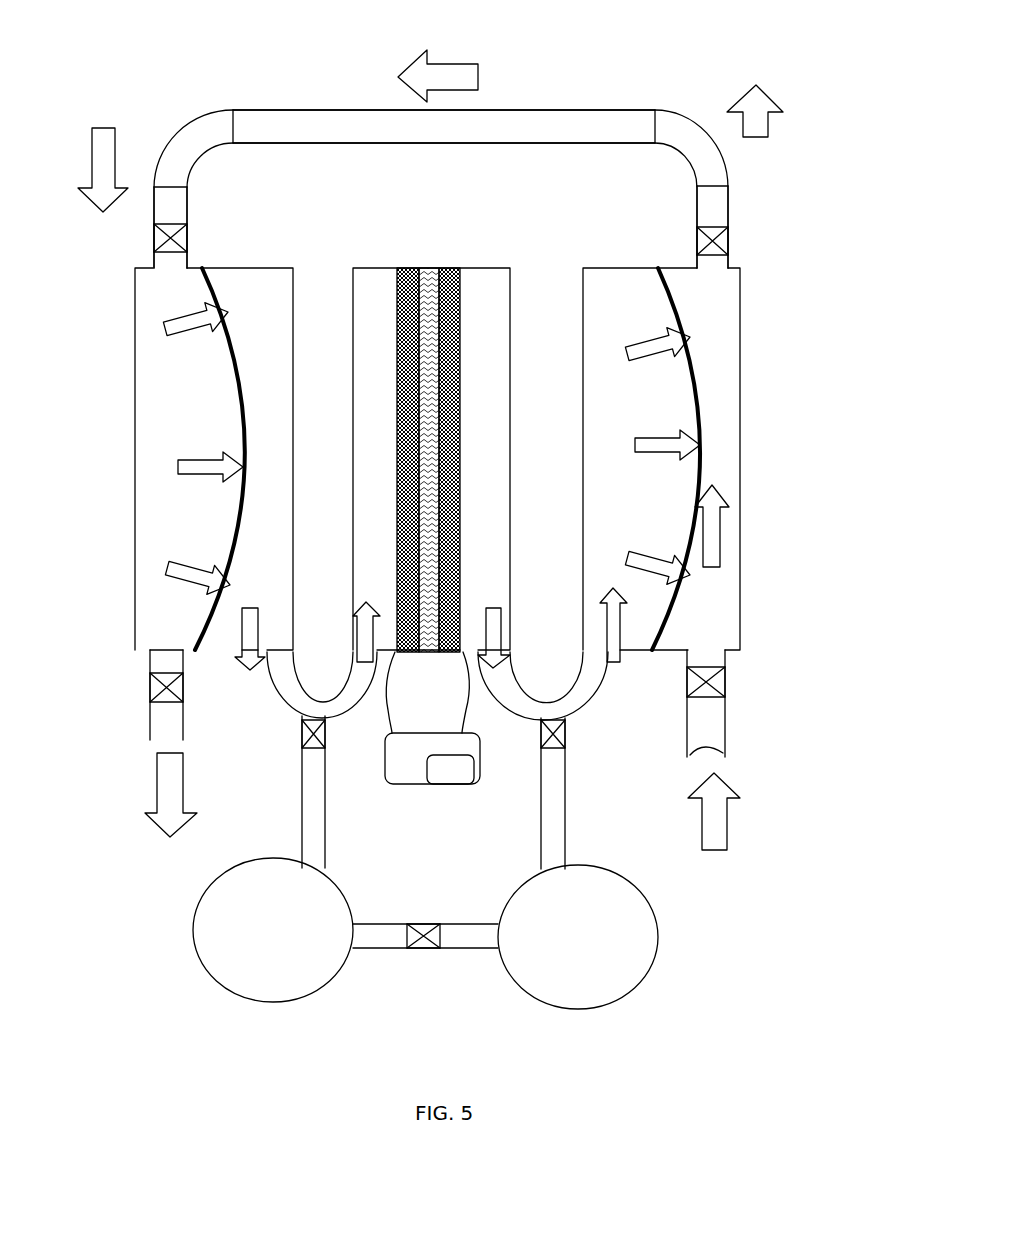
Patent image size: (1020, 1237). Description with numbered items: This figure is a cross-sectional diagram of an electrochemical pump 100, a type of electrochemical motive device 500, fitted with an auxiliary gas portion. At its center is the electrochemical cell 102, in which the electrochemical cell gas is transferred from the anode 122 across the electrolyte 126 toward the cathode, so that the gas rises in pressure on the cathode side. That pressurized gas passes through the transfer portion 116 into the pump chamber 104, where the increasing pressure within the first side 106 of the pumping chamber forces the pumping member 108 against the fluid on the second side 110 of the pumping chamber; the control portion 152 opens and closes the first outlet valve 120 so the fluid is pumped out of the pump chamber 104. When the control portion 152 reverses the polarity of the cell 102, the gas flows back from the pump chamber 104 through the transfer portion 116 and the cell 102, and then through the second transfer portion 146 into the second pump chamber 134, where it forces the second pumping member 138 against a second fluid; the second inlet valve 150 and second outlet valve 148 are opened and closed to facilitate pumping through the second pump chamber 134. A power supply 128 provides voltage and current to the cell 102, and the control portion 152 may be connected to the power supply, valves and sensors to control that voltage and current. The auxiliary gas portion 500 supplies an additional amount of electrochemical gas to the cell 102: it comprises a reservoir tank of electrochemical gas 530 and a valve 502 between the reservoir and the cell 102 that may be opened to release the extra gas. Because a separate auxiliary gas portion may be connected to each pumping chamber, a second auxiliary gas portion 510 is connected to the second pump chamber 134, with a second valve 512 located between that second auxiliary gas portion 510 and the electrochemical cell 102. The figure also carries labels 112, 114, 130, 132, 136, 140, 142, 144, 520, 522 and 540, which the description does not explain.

The electrochemical pump 100 is at (210, 90).
The auxiliary gas portion 500 is at (574, 80).
The electrochemical cell 102 is at (465, 295).
The pump chamber 104 is at (742, 603).
The first side of the pumping chamber 106 is at (633, 268).
The pumping member 108 is at (700, 462).
The second side of the pumping chamber 110 is at (717, 350).
The second conduit 112 is at (692, 673).
The return pipe section 114 is at (710, 200).
The transfer portion 116 is at (540, 670).
The first outlet valve 120 is at (700, 230).
The anode 122 is at (444, 145).
The electrolyte 126 is at (450, 270).
The power supply 128 is at (408, 787).
The collector inlet 130 is at (377, 705).
The collector outlet 132 is at (480, 707).
The second pump chamber 134 is at (136, 600).
The first gas space 136 is at (257, 290).
The second pumping member 138 is at (240, 423).
The first membrane 140 is at (190, 365).
The first outlet conduit 142 is at (168, 714).
The first pipe section 144 is at (190, 202).
The second transfer portion 146 is at (320, 700).
The second outlet valve 148 is at (147, 685).
The second inlet valve 150 is at (170, 232).
The control portion 152 is at (447, 777).
The valve 502 is at (568, 740).
The second auxiliary gas portion 510 is at (222, 930).
The second valve 512 is at (305, 738).
The tank connecting conduit 520 is at (453, 938).
The connecting valve 522 is at (418, 948).
The reservoir tank of electrochemical gas 530 is at (615, 975).
The first tank content 540 is at (237, 972).